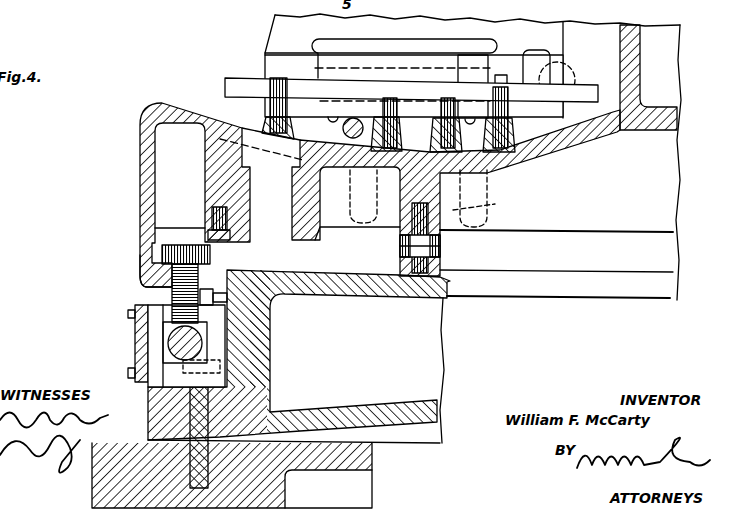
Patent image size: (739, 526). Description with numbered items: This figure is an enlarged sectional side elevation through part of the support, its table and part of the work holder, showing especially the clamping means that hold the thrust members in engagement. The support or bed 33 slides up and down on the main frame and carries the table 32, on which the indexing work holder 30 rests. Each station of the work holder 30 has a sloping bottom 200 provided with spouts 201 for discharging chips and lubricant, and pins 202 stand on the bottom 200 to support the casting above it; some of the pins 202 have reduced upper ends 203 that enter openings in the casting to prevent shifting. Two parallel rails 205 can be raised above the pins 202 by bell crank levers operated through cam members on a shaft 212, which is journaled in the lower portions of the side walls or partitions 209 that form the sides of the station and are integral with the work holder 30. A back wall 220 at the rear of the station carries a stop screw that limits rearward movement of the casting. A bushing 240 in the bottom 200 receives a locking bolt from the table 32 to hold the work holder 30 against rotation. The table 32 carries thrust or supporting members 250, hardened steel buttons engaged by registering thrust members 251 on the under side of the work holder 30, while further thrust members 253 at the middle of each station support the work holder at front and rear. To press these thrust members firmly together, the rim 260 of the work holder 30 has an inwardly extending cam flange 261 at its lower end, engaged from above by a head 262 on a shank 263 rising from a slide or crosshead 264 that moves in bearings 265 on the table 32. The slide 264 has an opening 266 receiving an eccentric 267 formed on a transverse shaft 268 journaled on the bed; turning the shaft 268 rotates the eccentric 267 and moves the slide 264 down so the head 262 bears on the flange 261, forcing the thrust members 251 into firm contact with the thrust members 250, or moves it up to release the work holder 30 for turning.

The indexing work holder 30 is at (395, 87).
The table 32 is at (434, 370).
The support or bed 33 is at (372, 462).
The sloping bottom 200 is at (545, 151).
The spouts 201 is at (484, 209).
The pins 202 is at (521, 118).
The reduced upper ends 203 is at (499, 75).
The rails 205 is at (295, 87).
The side walls or partitions 209 is at (371, 42).
The shaft 212 is at (343, 128).
The back wall 220 is at (639, 33).
The bushing 240 is at (264, 173).
The thrust or supporting members 250 is at (437, 248).
The thrust members 251 is at (400, 242).
The thrust members 253 is at (246, 229).
The rim 260 is at (141, 214).
The cam flange 261 is at (139, 271).
The head 262 is at (182, 247).
The shank 263 is at (195, 280).
The slide or crosshead 264 is at (218, 335).
The bearings 265 is at (150, 338).
The opening 266 is at (170, 318).
The eccentric 267 is at (165, 352).
The transverse shaft 268 is at (142, 323).